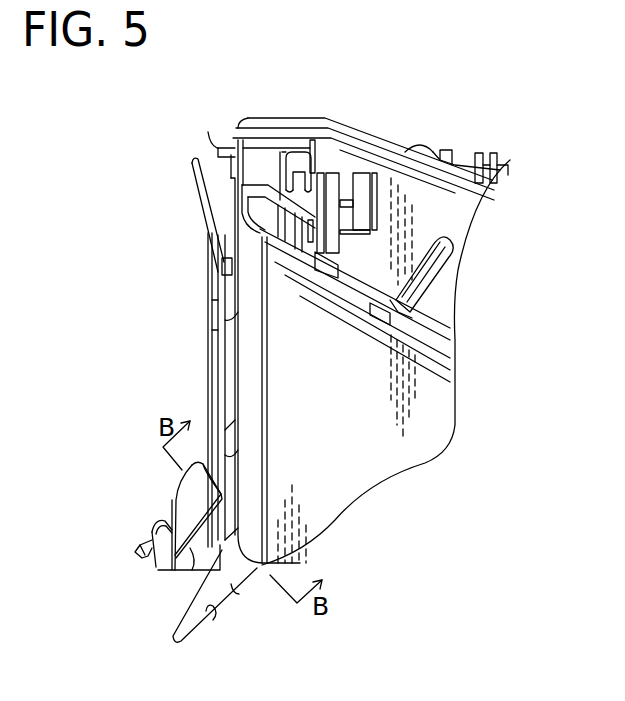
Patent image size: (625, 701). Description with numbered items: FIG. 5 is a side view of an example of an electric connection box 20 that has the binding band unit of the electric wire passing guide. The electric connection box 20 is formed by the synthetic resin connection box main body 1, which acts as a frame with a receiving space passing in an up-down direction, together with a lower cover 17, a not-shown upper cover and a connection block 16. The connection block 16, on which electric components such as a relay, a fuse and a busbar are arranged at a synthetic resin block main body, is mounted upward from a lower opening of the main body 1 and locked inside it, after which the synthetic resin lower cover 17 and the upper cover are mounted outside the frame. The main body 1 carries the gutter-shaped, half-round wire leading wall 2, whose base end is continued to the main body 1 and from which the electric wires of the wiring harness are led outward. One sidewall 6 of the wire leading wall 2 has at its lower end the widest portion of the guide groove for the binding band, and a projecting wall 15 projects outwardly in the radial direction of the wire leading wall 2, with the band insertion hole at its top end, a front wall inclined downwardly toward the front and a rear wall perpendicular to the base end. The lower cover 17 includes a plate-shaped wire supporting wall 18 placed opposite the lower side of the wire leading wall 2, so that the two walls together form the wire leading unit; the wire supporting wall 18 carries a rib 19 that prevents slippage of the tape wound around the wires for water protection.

The electric connection box main body 1 is at (360, 124).
The wire leading wall 2 is at (143, 530).
The one sidewall 6 is at (200, 572).
The projecting wall 15 is at (192, 490).
The connection block 16 is at (505, 175).
The lower cover 17 is at (428, 465).
The wire supporting wall 18 is at (206, 626).
The rib 19 is at (300, 186).
The electric connection box 20 is at (598, 251).